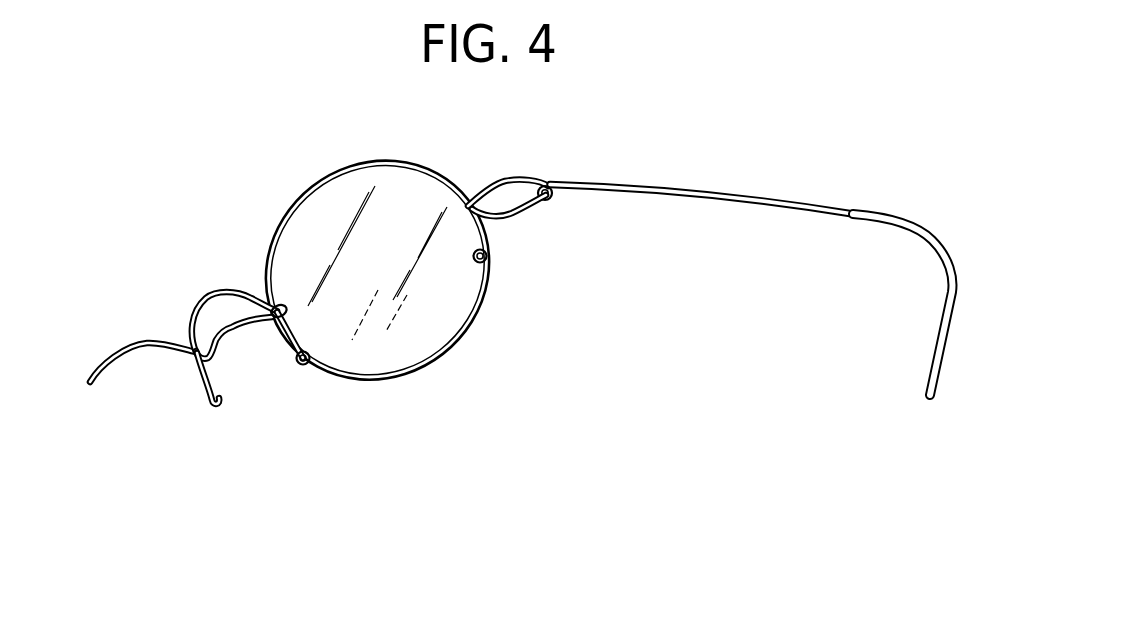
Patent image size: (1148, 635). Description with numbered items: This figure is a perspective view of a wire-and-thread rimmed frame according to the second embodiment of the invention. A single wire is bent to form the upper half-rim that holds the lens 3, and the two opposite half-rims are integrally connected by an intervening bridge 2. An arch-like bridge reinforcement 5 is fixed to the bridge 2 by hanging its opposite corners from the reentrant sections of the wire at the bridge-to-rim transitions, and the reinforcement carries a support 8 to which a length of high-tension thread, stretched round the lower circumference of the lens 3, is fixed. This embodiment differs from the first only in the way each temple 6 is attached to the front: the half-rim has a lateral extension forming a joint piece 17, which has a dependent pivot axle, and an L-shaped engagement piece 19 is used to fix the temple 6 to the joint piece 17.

The bridge 2 is at (213, 292).
The lens 3 is at (418, 320).
The arch-like bridge reinforcement 5 is at (228, 333).
The temple 6 is at (685, 192).
The support 8 is at (203, 382).
The joint piece 17 is at (502, 178).
The L-shaped engagement piece 19 is at (507, 220).